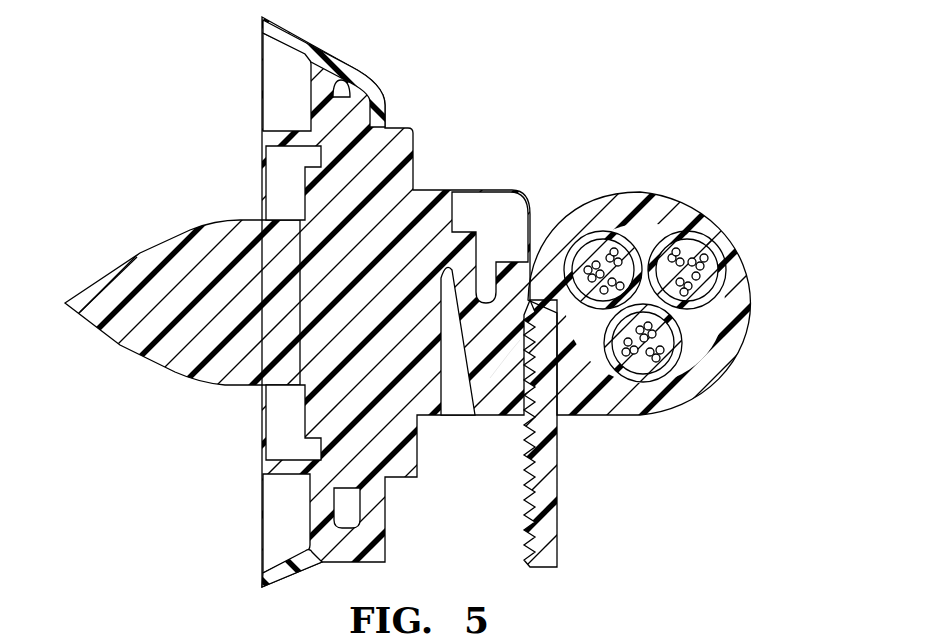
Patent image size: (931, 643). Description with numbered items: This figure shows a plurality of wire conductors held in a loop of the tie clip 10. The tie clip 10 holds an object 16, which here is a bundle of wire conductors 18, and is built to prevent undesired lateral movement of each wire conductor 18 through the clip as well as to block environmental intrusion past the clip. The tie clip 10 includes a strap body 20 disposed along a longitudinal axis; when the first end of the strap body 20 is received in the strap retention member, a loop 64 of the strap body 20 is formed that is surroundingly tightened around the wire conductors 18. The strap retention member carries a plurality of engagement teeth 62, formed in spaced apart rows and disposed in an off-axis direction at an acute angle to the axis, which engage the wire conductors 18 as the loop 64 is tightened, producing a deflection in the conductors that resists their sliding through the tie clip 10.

The tie clip 10 is at (697, 47).
The object 16 is at (465, 321).
The wire conductor 18 is at (601, 258).
The strap body 20 is at (738, 358).
The engagement teeth 62 is at (521, 343).
The loop 64 is at (762, 289).